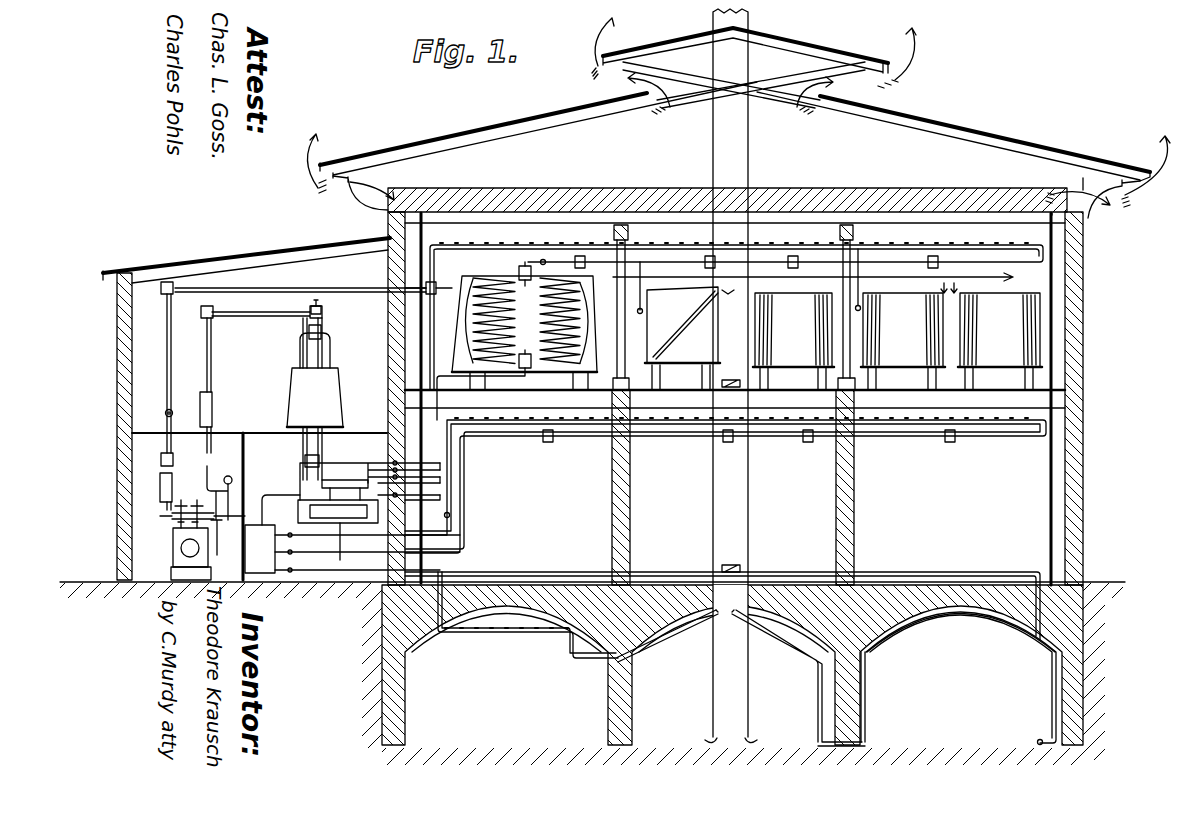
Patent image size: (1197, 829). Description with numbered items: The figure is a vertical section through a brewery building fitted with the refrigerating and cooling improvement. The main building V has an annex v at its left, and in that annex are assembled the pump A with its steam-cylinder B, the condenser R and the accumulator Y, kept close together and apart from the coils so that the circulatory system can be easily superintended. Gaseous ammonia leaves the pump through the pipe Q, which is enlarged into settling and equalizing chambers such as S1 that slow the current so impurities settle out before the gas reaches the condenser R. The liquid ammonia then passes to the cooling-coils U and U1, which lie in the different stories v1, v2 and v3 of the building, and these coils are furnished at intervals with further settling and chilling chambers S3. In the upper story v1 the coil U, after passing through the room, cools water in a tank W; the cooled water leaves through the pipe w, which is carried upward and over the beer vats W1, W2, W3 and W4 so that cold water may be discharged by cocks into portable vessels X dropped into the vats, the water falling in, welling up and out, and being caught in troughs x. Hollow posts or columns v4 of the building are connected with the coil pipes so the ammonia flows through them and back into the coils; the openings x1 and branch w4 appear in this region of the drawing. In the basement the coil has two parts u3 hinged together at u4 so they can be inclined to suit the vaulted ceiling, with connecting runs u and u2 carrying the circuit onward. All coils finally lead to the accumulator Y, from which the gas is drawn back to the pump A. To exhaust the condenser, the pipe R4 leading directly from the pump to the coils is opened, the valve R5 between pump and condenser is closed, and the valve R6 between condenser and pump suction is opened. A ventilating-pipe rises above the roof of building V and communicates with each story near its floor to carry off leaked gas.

The main building V is at (735, 123).
The annex v is at (246, 258).
The story v1 is at (1082, 246).
The story v2 is at (1052, 496).
The story v3 is at (1048, 670).
The posts or columns v4 is at (633, 297).
The cooling-coil U is at (736, 305).
The cooling-coil U1 is at (725, 485).
The basement pipe u is at (651, 659).
The arch pipe u2 is at (905, 640).
The coil parts u3 is at (725, 653).
The hinge u4 is at (722, 624).
The pipe w is at (815, 270).
The branch pipe w4 is at (850, 291).
The tank W is at (429, 302).
The beer vat or tank W1 is at (567, 341).
The beer vat or tank W2 is at (793, 341).
The beer vat or tank W3 is at (903, 341).
The beer vat or tank W4 is at (1000, 341).
The vessel X is at (682, 338).
The trough x is at (733, 298).
The air openings x1 is at (856, 299).
The settling and chilling chamber S3 is at (948, 462).
The condenser R is at (315, 390).
The pipe R4 is at (160, 373).
The valve R5 is at (179, 421).
The valve R6 is at (228, 490).
The pipe Q is at (212, 357).
The settling and equalizing chamber S1 is at (212, 412).
The pump A is at (173, 550).
The steam-cylinder B is at (160, 490).
The accumulator Y is at (352, 534).